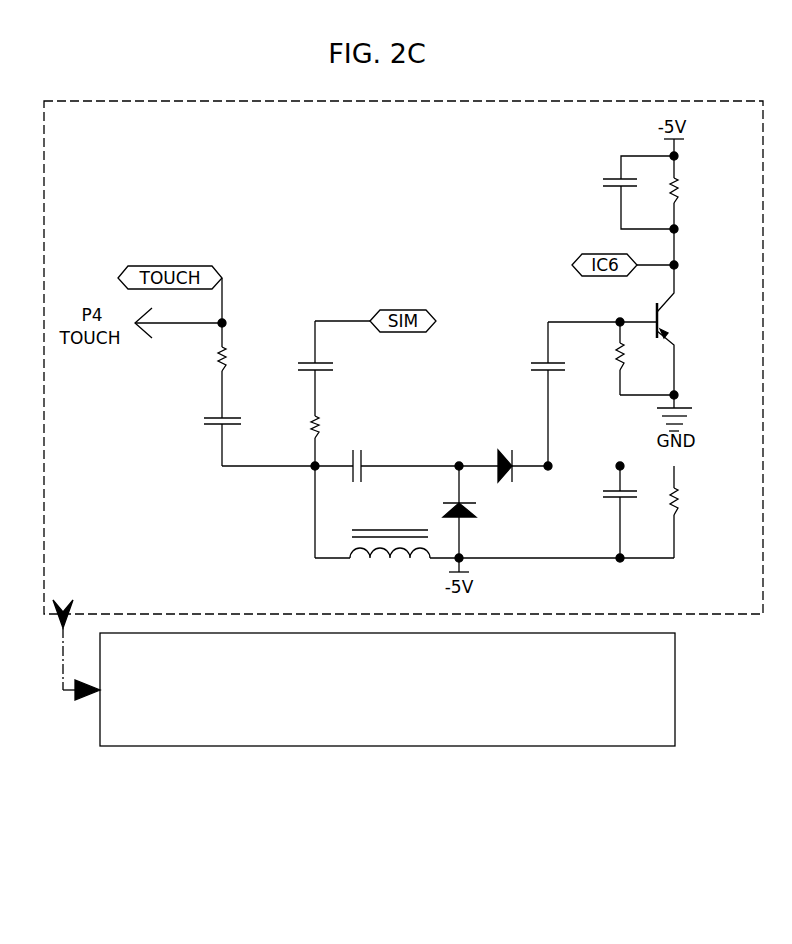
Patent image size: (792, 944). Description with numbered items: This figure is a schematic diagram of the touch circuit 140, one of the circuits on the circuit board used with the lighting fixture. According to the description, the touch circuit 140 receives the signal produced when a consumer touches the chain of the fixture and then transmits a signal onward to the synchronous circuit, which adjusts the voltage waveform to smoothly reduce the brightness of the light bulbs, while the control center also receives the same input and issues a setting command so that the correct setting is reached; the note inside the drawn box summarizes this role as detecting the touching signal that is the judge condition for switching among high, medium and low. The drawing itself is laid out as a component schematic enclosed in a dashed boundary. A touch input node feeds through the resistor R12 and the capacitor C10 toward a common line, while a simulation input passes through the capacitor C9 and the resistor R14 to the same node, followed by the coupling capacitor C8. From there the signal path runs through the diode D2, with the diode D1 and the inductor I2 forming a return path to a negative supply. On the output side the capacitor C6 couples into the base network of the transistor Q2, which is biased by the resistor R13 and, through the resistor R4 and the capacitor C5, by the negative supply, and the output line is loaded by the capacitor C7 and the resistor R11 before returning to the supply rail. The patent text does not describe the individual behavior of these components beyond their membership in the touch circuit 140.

The touch circuit 140 is at (387, 689).
The resistor R12 is at (201, 347).
The capacitor C10 is at (204, 418).
The capacitor C9 is at (329, 368).
The resistor R14 is at (335, 441).
The capacitor C8 is at (406, 474).
The diode D2 is at (503, 453).
The diode D1 is at (477, 512).
The inductor I,2 I2 is at (390, 560).
The capacitor C6 is at (536, 394).
The resistor R13 is at (626, 358).
The transistor Q2 is at (682, 330).
The resistor R4 is at (690, 210).
The capacitor C5 is at (624, 192).
The capacitor C7 is at (607, 512).
The resistor R11 is at (695, 512).